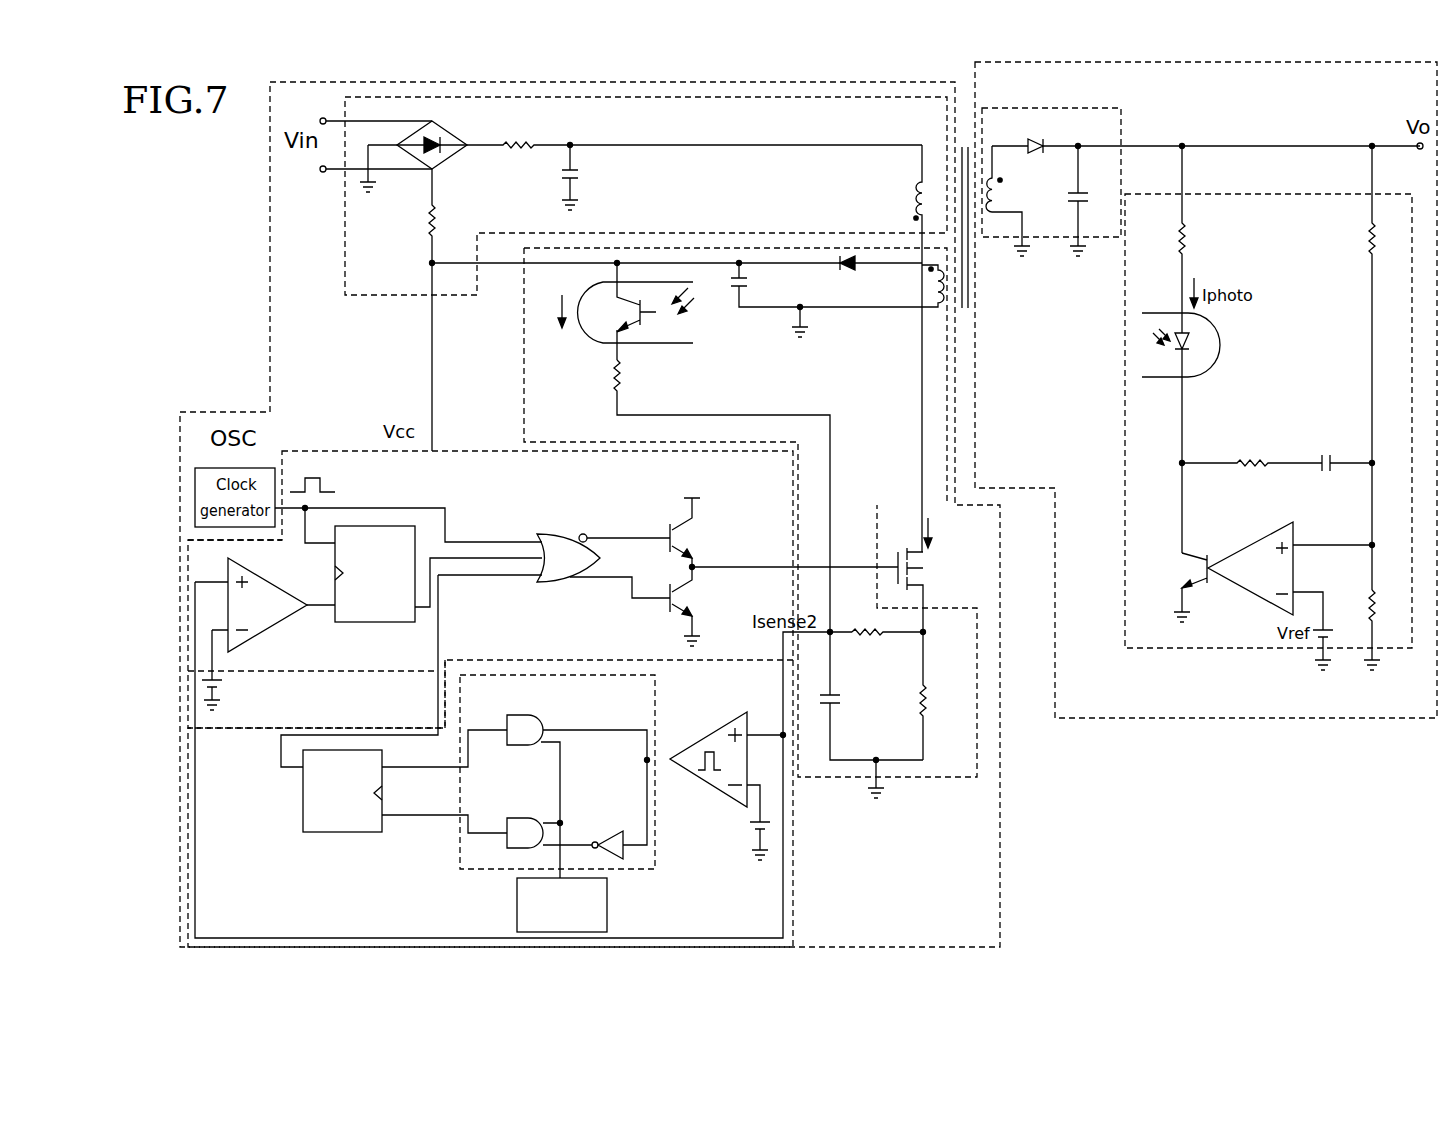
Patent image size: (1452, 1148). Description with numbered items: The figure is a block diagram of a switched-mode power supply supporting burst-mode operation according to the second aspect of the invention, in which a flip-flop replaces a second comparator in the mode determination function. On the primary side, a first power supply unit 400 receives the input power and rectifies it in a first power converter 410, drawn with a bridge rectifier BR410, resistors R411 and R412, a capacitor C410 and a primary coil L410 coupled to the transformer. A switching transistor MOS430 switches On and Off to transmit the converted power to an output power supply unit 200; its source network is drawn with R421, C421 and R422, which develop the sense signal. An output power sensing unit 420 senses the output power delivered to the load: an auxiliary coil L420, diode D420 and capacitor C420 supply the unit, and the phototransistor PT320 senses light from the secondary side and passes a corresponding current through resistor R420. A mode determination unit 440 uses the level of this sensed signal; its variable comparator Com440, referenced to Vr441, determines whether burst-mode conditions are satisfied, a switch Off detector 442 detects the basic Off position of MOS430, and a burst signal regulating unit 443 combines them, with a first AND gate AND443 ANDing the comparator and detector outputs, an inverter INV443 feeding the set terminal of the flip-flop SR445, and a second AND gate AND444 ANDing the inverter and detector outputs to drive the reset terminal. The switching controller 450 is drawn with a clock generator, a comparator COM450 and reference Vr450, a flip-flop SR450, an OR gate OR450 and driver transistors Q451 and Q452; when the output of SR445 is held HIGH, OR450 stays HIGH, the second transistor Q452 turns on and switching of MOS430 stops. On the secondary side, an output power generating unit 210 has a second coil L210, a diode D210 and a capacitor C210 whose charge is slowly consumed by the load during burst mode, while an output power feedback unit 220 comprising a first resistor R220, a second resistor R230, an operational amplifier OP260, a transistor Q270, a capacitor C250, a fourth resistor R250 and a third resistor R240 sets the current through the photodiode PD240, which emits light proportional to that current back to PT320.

The output power supply unit 200 is at (1168, 718).
The output power generating unit 210 is at (1050, 108).
The output power feedback unit 220 is at (1178, 648).
The first power supply unit 400 is at (270, 240).
The first power converter 410 is at (345, 275).
The output power sensing unit 420 is at (522, 343).
The mode determination unit 440 is at (794, 905).
The switch Off detector 442 is at (607, 912).
The burst signal regulating unit 443 is at (458, 851).
The switching controller 450 is at (468, 451).
The bridge rectifier BR410 is at (457, 137).
The resistor R411 is at (699, 158).
The capacitor C410 is at (599, 177).
The resistor R412 is at (406, 310).
The primary winding L410 is at (895, 348).
The auxiliary winding L420 is at (935, 311).
The capacitor C420 is at (826, 284).
The diode D420 is at (848, 276).
The phototransistor PT320 is at (611, 311).
The resistor R420 is at (722, 496).
The switching transistor MOS430 is at (843, 575).
The comparator COM450 is at (276, 630).
The reference voltage source Vr450 is at (238, 670).
The SR flip-flop SR450 is at (375, 626).
The OR gate OR450 is at (546, 528).
The transistor Q451 is at (708, 520).
The second transistor Q452 is at (708, 606).
The resistor R421 is at (885, 647).
The capacitor C421 is at (871, 696).
The sense resistor R422 is at (949, 696).
The flip-flop SR445 is at (341, 834).
The first AND gate AND443 is at (577, 787).
The second AND gate AND444 is at (546, 824).
The inverter INV443 is at (619, 809).
The variable comparator Com440 is at (706, 730).
The reference voltage source Vr441 is at (743, 841).
The diode D210 is at (1039, 134).
The second coil L210 is at (1014, 201).
The capacitor C210 is at (1062, 201).
The third resistor R240 is at (1206, 239).
The photodiode PD240 is at (1210, 433).
The first resistor R220 is at (1349, 368).
The fourth resistor R250 is at (1252, 452).
The capacitor C250 is at (1337, 449).
The operational amplifier OP260 is at (1256, 540).
The second resistor R230 is at (1356, 630).
The transistor Q270 is at (1174, 587).